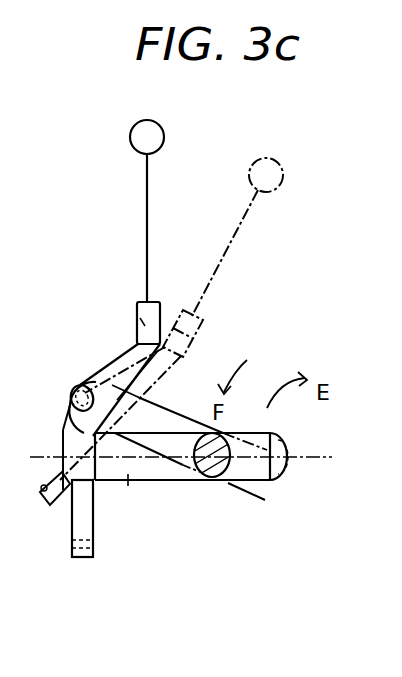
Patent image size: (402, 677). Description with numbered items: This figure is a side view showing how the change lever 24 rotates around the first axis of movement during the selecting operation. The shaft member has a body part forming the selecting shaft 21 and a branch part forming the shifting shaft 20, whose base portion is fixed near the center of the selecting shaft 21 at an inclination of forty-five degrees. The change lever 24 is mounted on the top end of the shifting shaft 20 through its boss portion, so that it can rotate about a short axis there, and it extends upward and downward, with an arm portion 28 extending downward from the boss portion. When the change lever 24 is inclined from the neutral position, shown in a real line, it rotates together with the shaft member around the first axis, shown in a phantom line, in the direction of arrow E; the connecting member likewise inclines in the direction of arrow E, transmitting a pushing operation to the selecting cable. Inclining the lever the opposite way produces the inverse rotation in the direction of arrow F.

The shifting shaft 20 is at (128, 479).
The selecting shaft 21 is at (282, 476).
The change lever 24 is at (142, 320).
The arm portion 28 is at (73, 518).